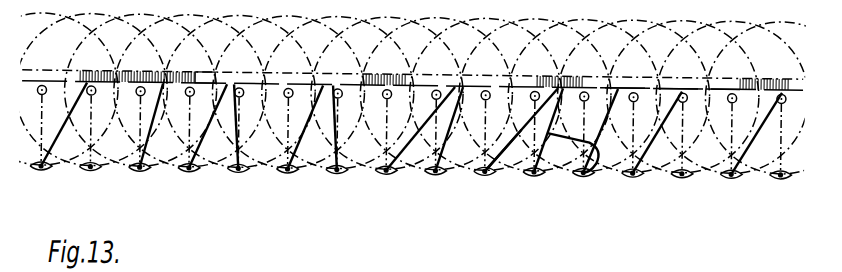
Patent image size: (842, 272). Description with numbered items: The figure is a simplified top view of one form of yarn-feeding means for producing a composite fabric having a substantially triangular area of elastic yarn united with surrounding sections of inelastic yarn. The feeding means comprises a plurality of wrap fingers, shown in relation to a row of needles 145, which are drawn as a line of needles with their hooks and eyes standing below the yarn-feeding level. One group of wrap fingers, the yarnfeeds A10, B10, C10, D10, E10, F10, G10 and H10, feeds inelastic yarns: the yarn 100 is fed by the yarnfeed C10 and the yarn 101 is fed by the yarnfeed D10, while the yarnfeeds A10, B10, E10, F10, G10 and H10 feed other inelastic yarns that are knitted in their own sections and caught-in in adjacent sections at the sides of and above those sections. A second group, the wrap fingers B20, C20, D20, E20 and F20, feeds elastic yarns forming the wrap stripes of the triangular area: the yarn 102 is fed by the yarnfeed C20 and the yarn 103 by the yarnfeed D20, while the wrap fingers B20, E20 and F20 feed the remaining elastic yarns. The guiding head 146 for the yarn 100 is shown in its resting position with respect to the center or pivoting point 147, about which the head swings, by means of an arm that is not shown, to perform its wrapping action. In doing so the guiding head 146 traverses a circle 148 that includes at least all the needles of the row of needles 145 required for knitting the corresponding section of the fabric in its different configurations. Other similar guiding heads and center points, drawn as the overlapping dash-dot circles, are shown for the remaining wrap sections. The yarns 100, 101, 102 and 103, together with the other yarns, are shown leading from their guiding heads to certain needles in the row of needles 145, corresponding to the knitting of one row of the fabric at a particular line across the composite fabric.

The yarn 100 is at (599, 172).
The yarn 101 is at (448, 150).
The yarn 102 is at (494, 166).
The yarn 103 is at (412, 149).
The row of needles 145 is at (697, 82).
The guiding head 146 is at (542, 169).
The pivoting point 147 is at (534, 94).
The circle 148 is at (505, 152).
The yarnfeed H10 is at (43, 160).
The yarnfeed G10 is at (133, 161).
The wrap finger F20 is at (187, 162).
The yarnfeed F10 is at (233, 163).
The wrap finger E20 is at (287, 163).
The yarnfeed E10 is at (334, 164).
The yarnfeed D20 is at (382, 164).
The yarnfeed D10 is at (434, 165).
The yarnfeed C20 is at (479, 166).
The yarnfeed C10 is at (528, 166).
The wrap finger B20 is at (582, 167).
The yarnfeed B10 is at (631, 167).
The yarnfeed A10 is at (727, 169).